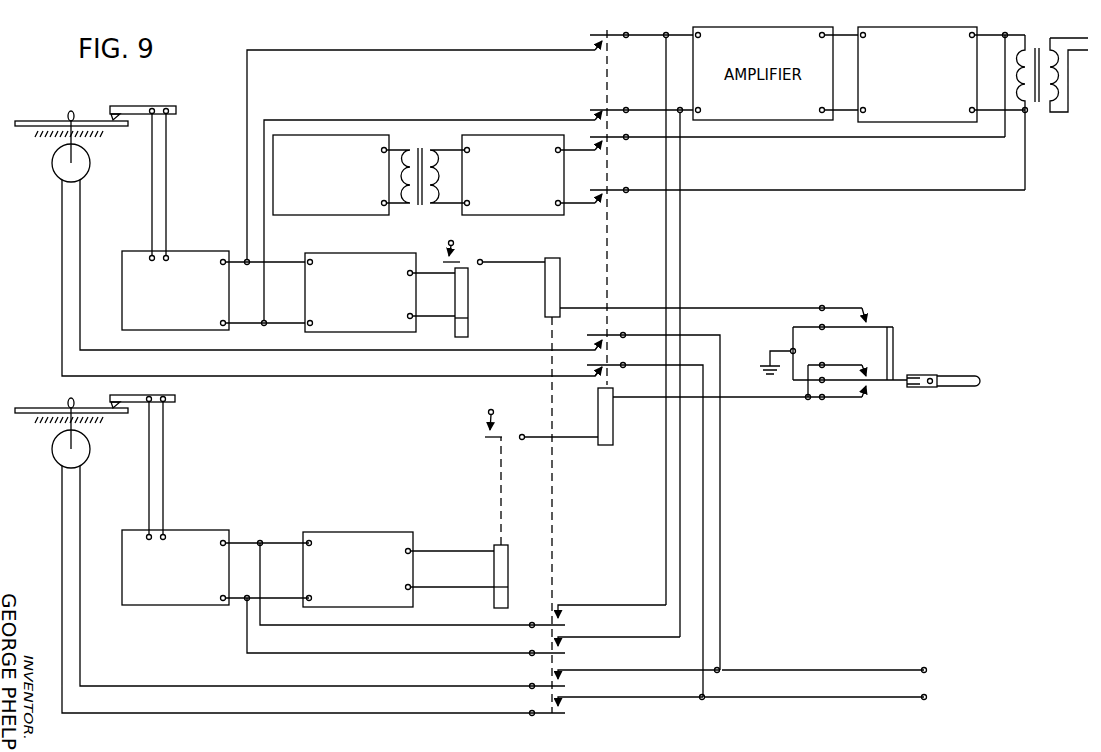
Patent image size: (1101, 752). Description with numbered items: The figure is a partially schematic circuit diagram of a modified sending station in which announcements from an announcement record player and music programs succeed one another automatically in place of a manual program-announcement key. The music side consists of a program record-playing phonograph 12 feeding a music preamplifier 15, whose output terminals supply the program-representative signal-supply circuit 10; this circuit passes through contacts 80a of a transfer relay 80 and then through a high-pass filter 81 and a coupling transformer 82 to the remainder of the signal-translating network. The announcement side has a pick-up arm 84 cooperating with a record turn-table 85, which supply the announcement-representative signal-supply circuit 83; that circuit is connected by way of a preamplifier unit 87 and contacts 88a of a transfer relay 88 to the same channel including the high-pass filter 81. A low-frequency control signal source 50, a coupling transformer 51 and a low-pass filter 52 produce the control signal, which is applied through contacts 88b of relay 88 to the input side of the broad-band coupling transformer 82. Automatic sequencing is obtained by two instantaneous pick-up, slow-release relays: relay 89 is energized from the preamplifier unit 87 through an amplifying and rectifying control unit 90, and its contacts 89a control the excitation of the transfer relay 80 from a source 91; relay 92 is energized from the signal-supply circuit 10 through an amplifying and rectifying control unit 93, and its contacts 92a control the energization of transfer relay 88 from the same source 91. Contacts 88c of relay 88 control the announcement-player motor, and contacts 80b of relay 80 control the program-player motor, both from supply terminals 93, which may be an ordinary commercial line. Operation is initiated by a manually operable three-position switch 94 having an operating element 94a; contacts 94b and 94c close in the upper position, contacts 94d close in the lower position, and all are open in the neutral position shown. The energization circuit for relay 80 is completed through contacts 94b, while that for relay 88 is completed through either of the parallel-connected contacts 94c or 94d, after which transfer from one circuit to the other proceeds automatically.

The program-representative signal-supply circuit 10 is at (247, 597).
The program record-playing phonograph 12 is at (120, 395).
The music preamplifier 15 is at (210, 514).
The low-frequency control signal source 50 is at (322, 215).
The coupling transformer 51 is at (410, 210).
The low-pass filter 52 is at (521, 215).
The transfer relay 80 is at (552, 270).
The contacts of transfer relay 80 80a is at (562, 648).
The contacts of transfer relay 80 80b is at (562, 708).
The high-pass filter 81 is at (948, 45).
The coupling transformer 82 is at (1053, 62).
The announcement-representative signal-supply circuit 83 is at (155, 237).
The pick-up arm 84 is at (140, 108).
The record turn-table 85 is at (88, 121).
The preamplifier unit 87 is at (122, 296).
The transfer relay 88 is at (612, 425).
The contacts of transfer relay 88 88a is at (600, 114).
The contacts of transfer relay 88 88b is at (603, 192).
The contacts of transfer relay 88 88c is at (602, 368).
The instantaneous pick-up, slow-release relay 89 is at (463, 304).
The contacts of relay 89 89a is at (462, 258).
The amplifying and rectifying control unit 90 is at (366, 265).
The source 91 is at (448, 243).
The instantaneous pick-up, slow-release relay 92 is at (498, 555).
The contacts of relay 92 92a is at (485, 435).
The amplifying and rectifying control unit 93 is at (358, 540).
The manually operable three-position switch 94 is at (903, 368).
The operating element 94a is at (962, 387).
The contacts 94b is at (875, 322).
The contacts 94c is at (870, 378).
The contacts 94d is at (868, 395).